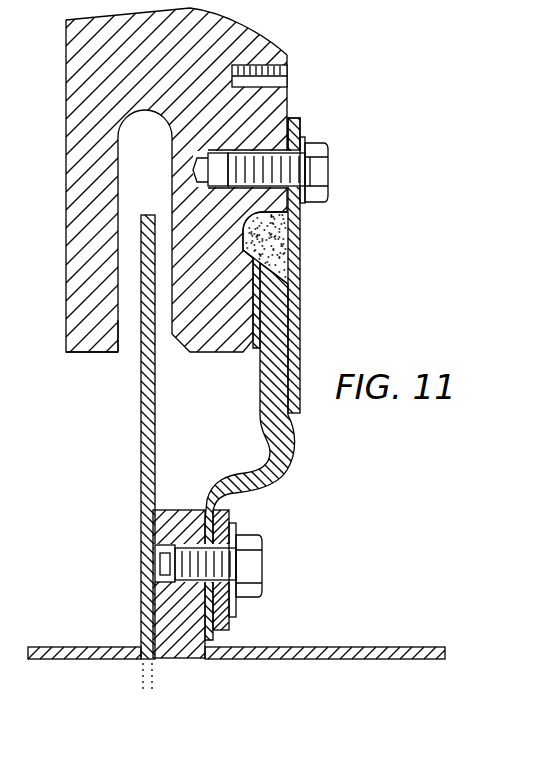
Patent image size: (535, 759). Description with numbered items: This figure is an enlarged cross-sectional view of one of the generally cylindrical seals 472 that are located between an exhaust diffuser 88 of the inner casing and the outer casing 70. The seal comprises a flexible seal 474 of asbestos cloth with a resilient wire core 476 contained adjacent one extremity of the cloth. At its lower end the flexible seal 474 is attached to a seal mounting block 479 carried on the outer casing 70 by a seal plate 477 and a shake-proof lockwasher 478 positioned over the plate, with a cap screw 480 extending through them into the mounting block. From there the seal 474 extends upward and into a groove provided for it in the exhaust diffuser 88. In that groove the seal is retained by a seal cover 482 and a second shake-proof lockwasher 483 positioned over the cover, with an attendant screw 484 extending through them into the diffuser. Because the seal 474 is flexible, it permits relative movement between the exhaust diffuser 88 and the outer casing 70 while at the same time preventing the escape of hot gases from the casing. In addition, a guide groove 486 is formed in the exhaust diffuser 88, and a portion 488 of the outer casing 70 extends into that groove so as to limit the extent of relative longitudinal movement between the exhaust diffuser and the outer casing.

The exhaust diffuser 88 is at (248, 64).
The seal cover 482 is at (293, 120).
The shake-proof lockwasher 483 is at (303, 139).
The screw 484 is at (328, 150).
The resilient wire core 476 is at (273, 236).
The generally cylindrical seal 472 is at (302, 275).
The flexible seal 474 is at (296, 433).
The seal plate 477 is at (231, 513).
The shake-proof lockwasher 478 is at (237, 530).
The cap screw 480 is at (262, 559).
The seal mounting block 479 is at (178, 512).
The guide groove 486 is at (117, 329).
The portion of the outer casing 488 is at (155, 379).
The outer casing 70 is at (103, 658).